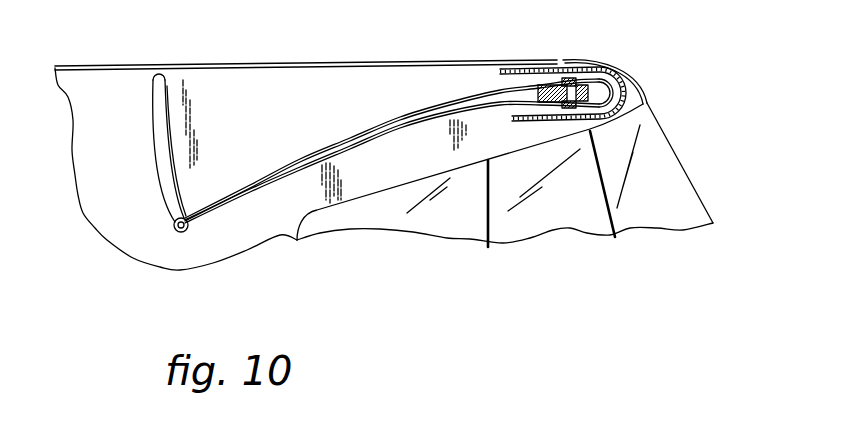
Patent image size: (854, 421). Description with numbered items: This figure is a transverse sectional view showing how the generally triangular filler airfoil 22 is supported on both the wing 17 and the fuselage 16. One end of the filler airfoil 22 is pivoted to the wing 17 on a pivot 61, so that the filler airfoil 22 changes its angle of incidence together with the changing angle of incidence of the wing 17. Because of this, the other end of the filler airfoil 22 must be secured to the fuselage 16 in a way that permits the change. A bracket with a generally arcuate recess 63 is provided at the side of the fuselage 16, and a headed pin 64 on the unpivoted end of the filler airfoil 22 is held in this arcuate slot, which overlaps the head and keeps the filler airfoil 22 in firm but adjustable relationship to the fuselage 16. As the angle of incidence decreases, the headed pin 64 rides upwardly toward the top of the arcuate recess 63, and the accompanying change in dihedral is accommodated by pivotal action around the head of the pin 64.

The fuselage 16 is at (267, 73).
The wing 17 is at (617, 75).
The filler airfoil 22 is at (305, 158).
The pivot 61 is at (573, 97).
The arcuate recess 63 is at (160, 135).
The headed pin 64 is at (174, 227).